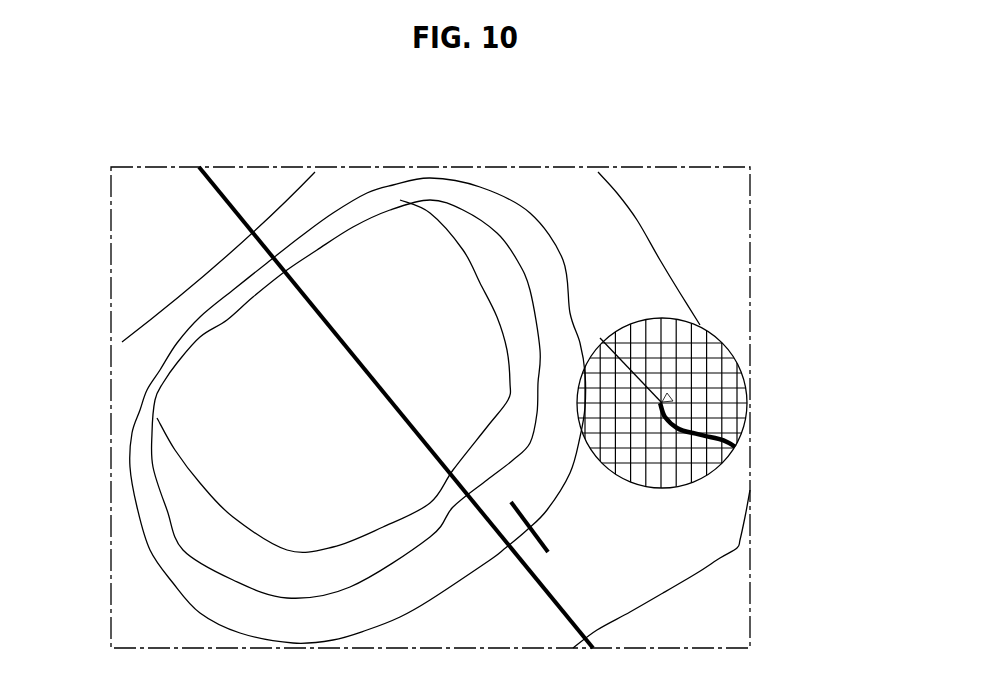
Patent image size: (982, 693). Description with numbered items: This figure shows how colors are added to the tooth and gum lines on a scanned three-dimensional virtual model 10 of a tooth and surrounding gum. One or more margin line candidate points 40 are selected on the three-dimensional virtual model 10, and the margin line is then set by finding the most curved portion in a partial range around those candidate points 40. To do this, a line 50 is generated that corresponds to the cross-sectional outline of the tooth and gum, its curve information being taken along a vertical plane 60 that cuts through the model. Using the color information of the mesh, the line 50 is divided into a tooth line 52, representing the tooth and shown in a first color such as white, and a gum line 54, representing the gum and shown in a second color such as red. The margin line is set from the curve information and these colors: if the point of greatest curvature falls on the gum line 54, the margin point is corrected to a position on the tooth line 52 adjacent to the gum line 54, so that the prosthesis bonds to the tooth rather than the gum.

The three-dimensional virtual model 10 is at (143, 383).
The margin line candidate point 40 is at (533, 528).
The line 50 is at (827, 252).
The tooth line 52 is at (650, 380).
The gum line 54 is at (727, 430).
The vertical plane 60 is at (242, 218).